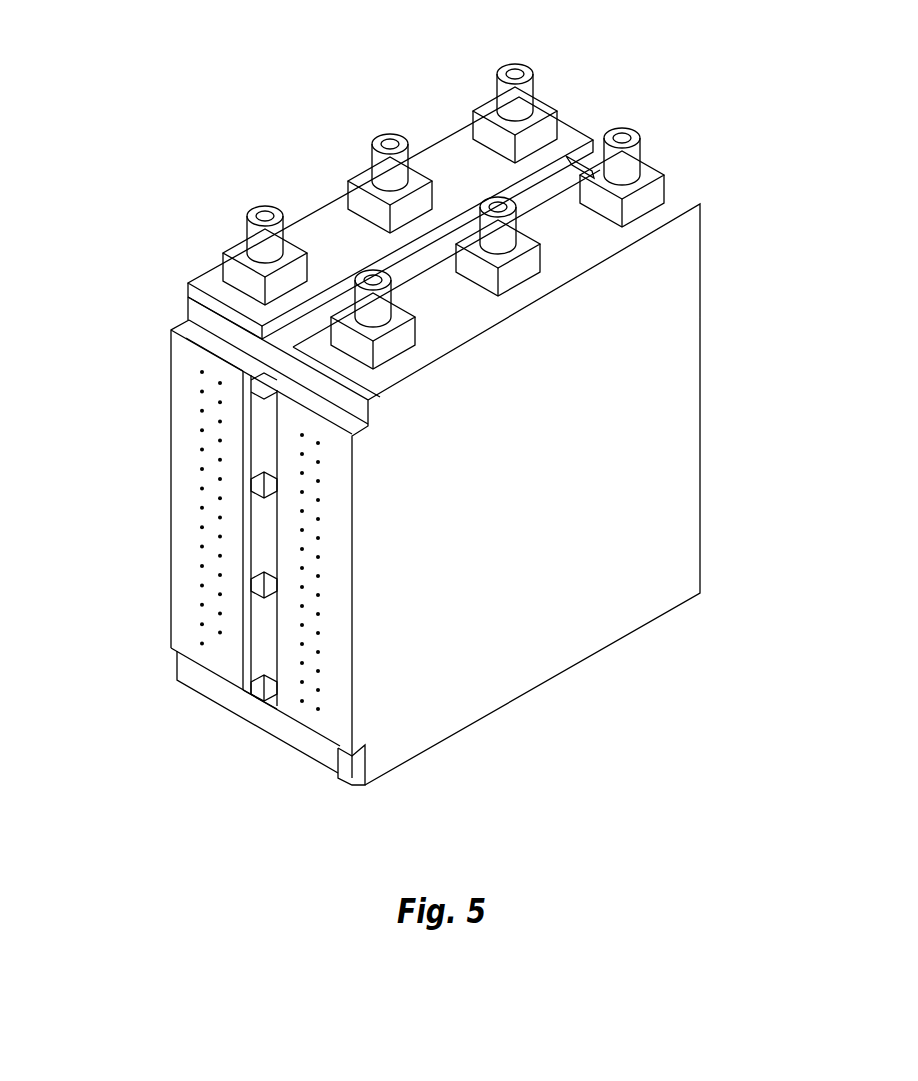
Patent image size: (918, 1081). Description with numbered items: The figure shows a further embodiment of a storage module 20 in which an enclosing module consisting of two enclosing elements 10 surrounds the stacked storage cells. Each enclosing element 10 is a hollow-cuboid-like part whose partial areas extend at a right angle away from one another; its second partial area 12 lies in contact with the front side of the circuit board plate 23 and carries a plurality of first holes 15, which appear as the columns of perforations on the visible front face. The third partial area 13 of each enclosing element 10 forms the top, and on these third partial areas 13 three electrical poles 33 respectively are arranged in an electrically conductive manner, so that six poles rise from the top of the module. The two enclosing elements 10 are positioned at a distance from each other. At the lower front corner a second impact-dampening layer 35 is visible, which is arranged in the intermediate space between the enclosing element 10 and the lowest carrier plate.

The enclosing element 10 is at (686, 197).
The second partial area 12 is at (186, 392).
The third partial area 13 is at (318, 228).
The first holes 15 is at (205, 527).
The storage module 20 is at (727, 190).
The circuit board plate 23 is at (250, 647).
The electrical poles 33 is at (510, 103).
The second impact-dampening layer 35 is at (331, 765).